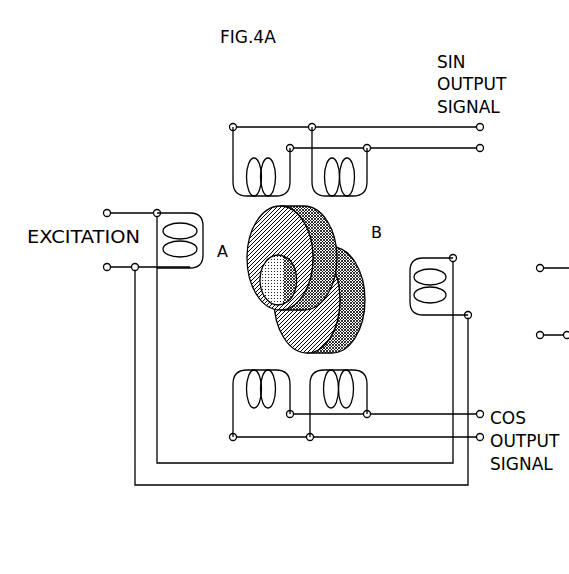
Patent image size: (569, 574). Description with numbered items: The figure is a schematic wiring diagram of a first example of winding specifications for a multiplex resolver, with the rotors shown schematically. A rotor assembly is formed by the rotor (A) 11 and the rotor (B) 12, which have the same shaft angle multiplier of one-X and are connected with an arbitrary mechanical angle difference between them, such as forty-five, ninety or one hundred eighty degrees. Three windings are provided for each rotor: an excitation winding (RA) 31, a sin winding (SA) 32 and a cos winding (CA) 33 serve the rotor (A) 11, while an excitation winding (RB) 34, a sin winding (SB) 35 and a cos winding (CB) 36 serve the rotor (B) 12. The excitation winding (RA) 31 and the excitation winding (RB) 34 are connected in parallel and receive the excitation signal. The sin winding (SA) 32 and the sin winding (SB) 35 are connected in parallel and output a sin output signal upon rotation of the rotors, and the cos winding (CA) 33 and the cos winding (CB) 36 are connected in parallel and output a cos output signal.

The rotor (A) 11 is at (250, 273).
The rotor (B) 12 is at (392, 260).
The excitation winding (RA) 31 is at (190, 213).
The sin winding (SA) 32 is at (233, 173).
The cos winding (CA) 33 is at (235, 378).
The excitation winding (RB) 34 is at (452, 244).
The sin winding (SB) 35 is at (403, 180).
The cos winding (CB) 36 is at (403, 383).